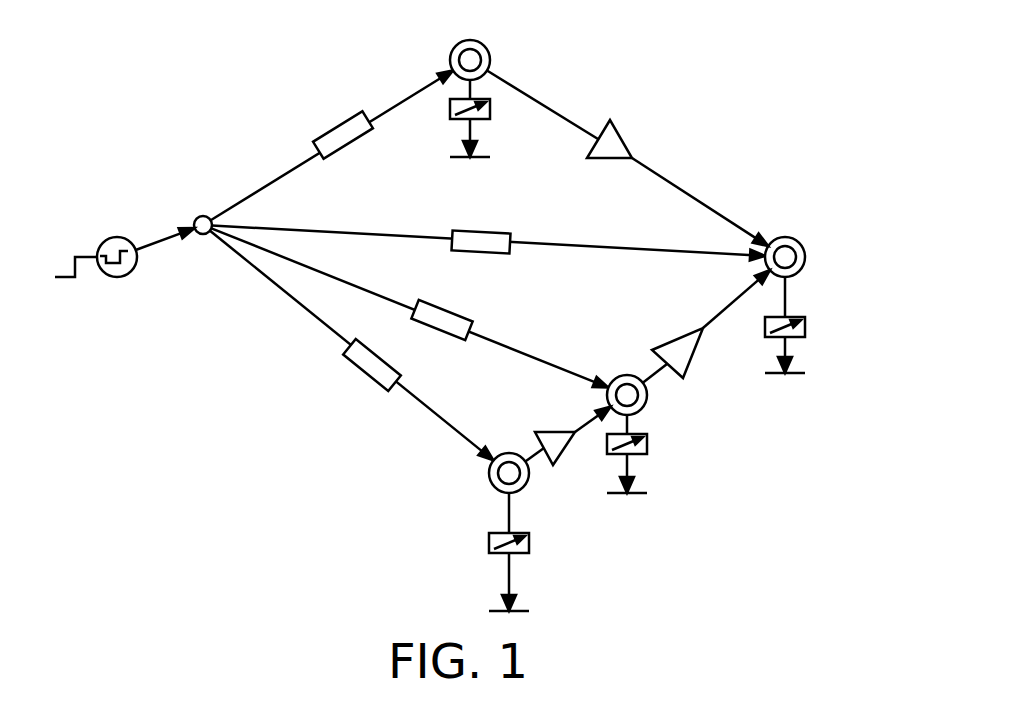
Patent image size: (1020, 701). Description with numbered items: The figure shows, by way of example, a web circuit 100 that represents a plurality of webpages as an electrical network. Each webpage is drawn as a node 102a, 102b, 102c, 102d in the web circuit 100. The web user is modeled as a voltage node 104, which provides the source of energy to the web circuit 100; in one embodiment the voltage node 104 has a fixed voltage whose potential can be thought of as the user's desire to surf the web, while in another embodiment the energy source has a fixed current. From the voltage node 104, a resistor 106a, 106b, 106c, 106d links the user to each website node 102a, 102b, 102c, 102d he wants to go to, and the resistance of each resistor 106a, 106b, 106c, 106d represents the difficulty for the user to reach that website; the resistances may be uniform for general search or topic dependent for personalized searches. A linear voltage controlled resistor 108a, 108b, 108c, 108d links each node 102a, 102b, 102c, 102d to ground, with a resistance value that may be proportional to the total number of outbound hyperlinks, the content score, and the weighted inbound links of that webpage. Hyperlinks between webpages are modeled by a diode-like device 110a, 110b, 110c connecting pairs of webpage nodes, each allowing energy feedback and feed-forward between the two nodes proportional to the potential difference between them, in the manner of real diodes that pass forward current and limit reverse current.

The web circuit 100 is at (148, 120).
The node 102a is at (455, 47).
The node 102b is at (492, 478).
The node 102c is at (624, 375).
The node 102d is at (790, 237).
The voltage node 104 is at (199, 217).
The resistor 106a is at (342, 123).
The resistor 106b is at (365, 378).
The resistor 106c is at (436, 333).
The resistor 106d is at (485, 232).
The linear voltage controlled resistor 108a is at (490, 108).
The linear voltage controlled resistor 108b is at (489, 544).
The linear voltage controlled resistor 108c is at (647, 445).
The linear voltage controlled resistor 108d is at (805, 327).
The diode-like device 110a is at (622, 140).
The diode-like device 110b is at (557, 432).
The diode-like device 110c is at (686, 335).